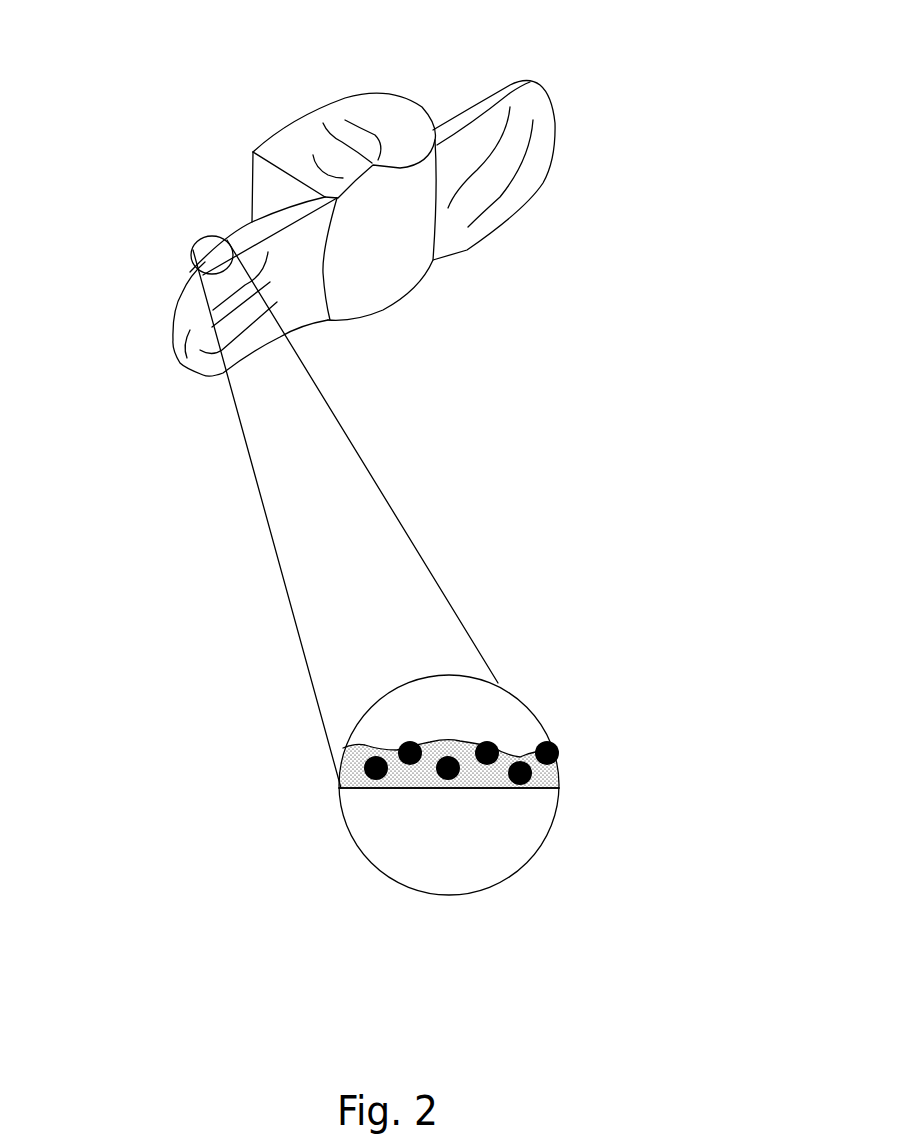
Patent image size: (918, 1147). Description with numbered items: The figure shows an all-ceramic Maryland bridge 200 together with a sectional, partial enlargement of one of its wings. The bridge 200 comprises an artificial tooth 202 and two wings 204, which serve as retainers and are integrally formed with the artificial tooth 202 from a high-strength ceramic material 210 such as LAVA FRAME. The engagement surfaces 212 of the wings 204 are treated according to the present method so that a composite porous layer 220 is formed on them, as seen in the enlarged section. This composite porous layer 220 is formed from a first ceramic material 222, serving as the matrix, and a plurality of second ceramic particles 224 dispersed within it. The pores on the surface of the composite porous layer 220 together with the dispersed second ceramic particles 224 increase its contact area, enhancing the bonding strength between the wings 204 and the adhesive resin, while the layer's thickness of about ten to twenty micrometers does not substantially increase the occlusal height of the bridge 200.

The all-ceramic Maryland bridge 200 is at (55, 21).
The artificial tooth 202 is at (343, 112).
The wings (retainers) 204 is at (530, 178).
The high-strength ceramic material 210 is at (513, 858).
The engagement surfaces 212 is at (517, 790).
The composite porous layer 220 is at (530, 728).
The first ceramic material 222 is at (520, 760).
The second ceramic particles 224 is at (553, 748).